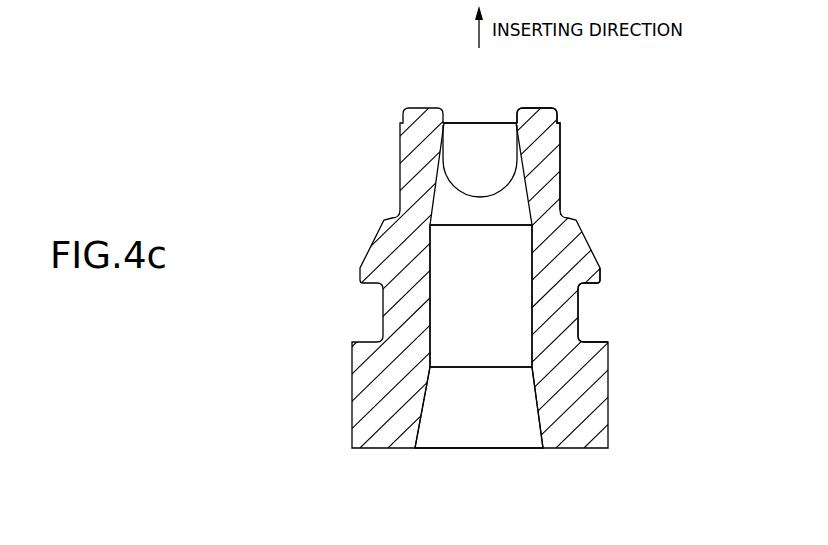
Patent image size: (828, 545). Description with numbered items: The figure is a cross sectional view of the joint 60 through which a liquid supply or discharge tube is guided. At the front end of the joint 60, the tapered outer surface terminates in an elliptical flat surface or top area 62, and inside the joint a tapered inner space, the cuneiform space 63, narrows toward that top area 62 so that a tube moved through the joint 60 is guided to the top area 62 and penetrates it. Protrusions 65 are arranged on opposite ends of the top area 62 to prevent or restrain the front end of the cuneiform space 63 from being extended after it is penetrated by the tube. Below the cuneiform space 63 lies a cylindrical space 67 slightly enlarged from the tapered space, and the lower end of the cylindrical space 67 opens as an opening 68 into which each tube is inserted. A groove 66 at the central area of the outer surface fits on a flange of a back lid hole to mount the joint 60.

The joint 60 is at (372, 242).
The elliptical flat surface 62 is at (480, 122).
The cuneiform space 63 is at (488, 176).
The protrusions 65 is at (530, 126).
The groove 66 is at (590, 312).
The cylindrical space 67 is at (494, 302).
The opening 68 is at (480, 449).